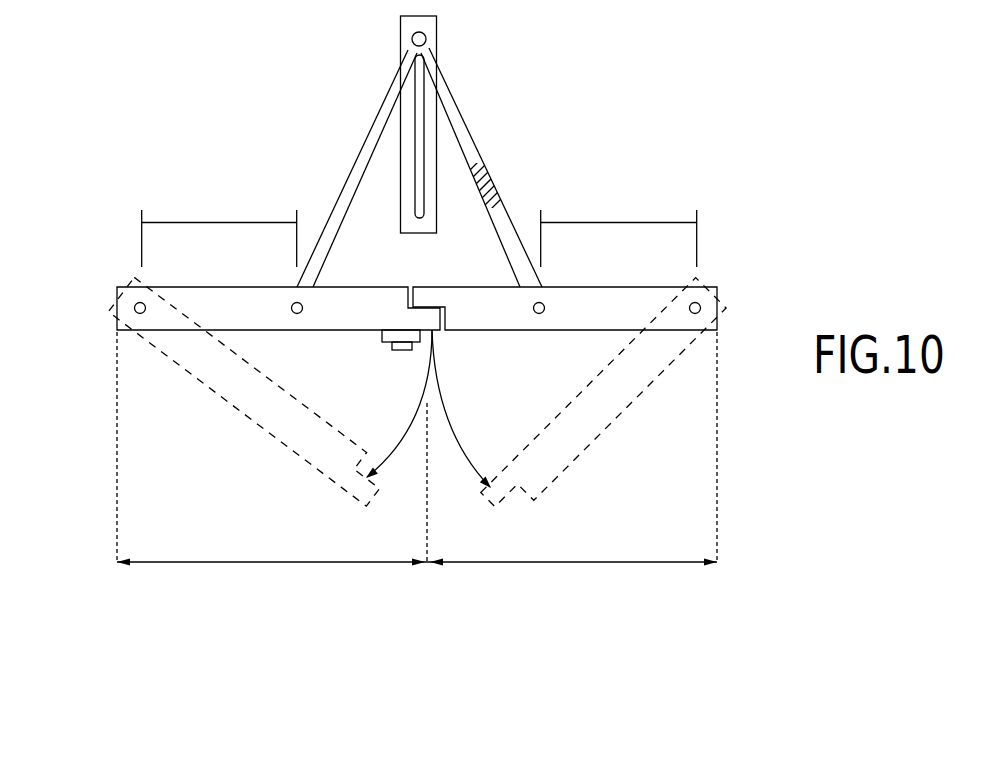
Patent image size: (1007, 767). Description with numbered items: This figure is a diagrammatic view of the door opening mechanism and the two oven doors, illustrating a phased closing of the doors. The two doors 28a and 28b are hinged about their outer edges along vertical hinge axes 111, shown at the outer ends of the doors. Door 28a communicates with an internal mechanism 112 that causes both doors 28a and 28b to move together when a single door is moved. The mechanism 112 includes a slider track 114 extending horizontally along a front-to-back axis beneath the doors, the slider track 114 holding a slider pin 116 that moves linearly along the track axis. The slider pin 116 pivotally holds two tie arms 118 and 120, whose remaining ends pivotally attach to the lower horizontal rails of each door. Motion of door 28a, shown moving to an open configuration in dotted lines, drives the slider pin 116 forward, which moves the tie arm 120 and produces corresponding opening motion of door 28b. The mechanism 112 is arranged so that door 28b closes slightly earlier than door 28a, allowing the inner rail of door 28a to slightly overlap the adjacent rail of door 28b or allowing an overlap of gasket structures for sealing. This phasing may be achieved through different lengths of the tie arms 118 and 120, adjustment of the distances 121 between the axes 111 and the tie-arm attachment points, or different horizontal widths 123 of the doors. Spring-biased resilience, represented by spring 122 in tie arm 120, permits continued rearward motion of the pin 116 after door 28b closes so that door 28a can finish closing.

The hinge axes 111 is at (137, 302).
The internal mechanism 112 is at (603, 111).
The slider track 114 is at (437, 33).
The slider pin 116 is at (413, 44).
The tie arm 118 is at (375, 132).
The tie arm 120 is at (462, 132).
The distances 121 is at (227, 222).
The spring 122 is at (495, 175).
The horizontal widths 123 is at (293, 562).
The door 28a is at (204, 300).
The door 28b is at (588, 298).